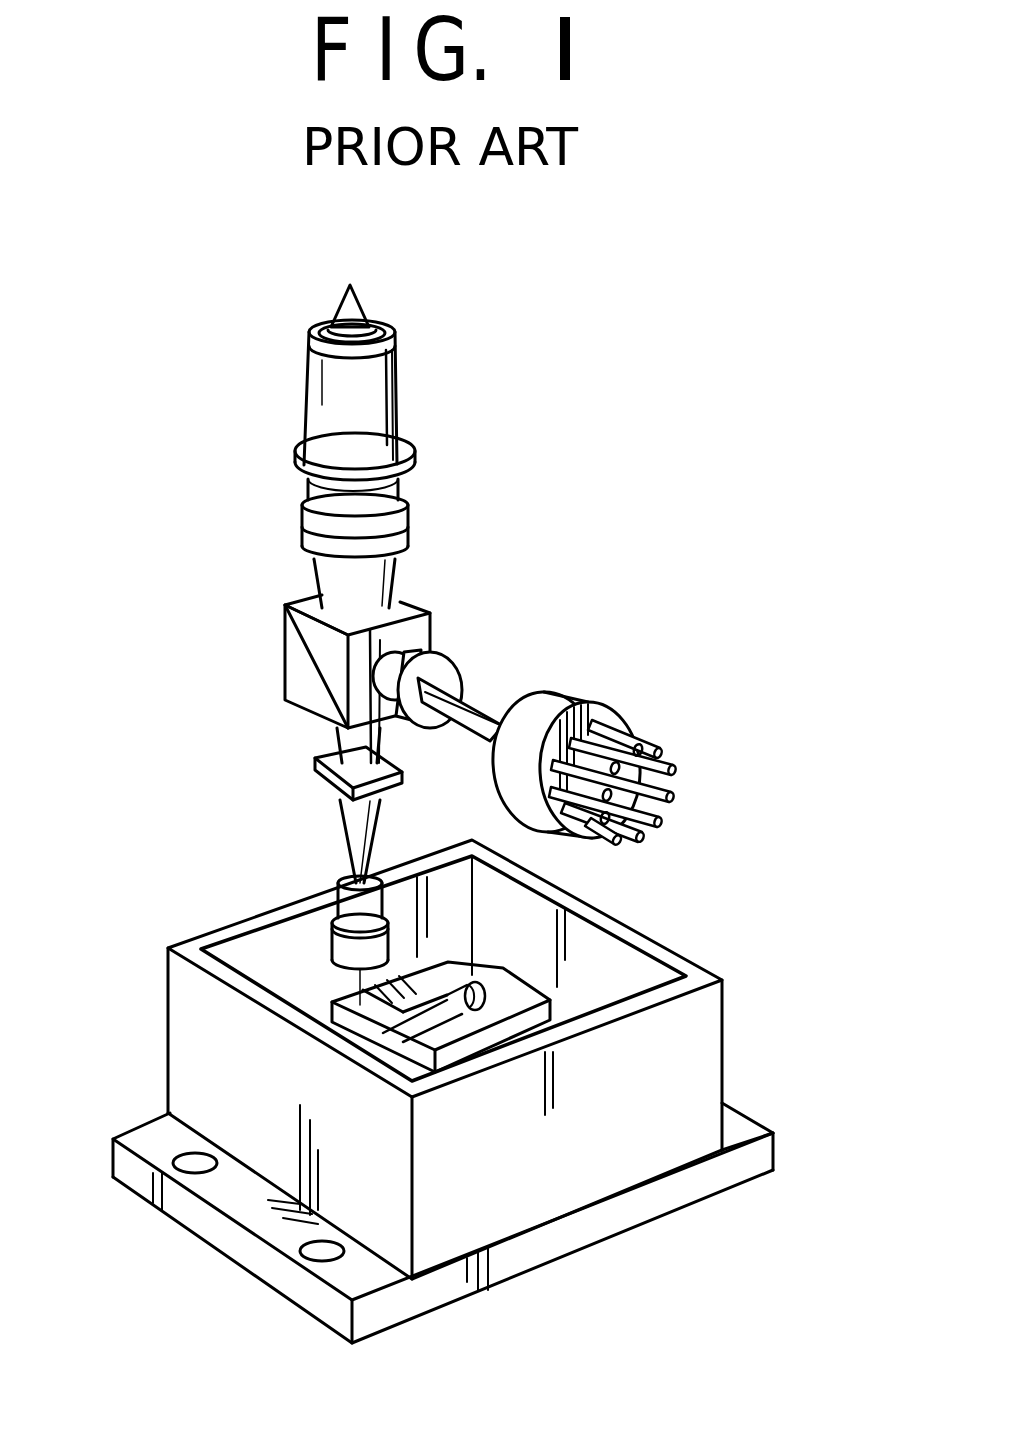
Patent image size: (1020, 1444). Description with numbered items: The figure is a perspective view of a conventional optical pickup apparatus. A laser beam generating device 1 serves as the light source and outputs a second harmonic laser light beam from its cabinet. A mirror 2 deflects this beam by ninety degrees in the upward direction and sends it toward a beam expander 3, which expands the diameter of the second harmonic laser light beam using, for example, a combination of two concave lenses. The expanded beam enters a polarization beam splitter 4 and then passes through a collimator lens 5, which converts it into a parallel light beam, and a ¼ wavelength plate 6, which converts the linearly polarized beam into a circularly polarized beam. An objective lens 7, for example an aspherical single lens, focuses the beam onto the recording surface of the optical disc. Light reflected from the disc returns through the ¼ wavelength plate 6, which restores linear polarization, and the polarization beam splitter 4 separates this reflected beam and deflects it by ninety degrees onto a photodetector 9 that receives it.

The laser beam generating device 1 is at (562, 978).
The mirror 2 is at (340, 1030).
The beam expander 3 is at (327, 930).
The polarization beam splitter 4 is at (288, 668).
The collimator lens 5 is at (410, 521).
The ¼ wavelength plate 6 is at (418, 462).
The objective lens 7 is at (391, 348).
The photodetector 9 is at (545, 708).